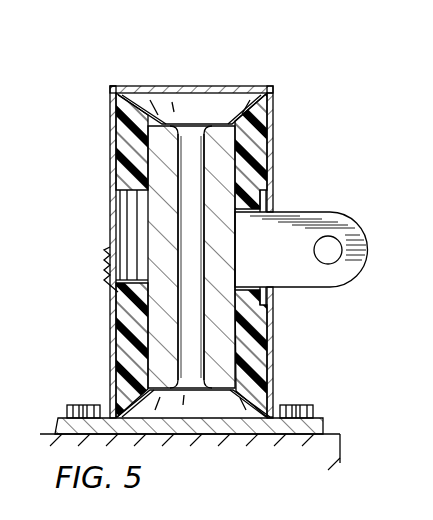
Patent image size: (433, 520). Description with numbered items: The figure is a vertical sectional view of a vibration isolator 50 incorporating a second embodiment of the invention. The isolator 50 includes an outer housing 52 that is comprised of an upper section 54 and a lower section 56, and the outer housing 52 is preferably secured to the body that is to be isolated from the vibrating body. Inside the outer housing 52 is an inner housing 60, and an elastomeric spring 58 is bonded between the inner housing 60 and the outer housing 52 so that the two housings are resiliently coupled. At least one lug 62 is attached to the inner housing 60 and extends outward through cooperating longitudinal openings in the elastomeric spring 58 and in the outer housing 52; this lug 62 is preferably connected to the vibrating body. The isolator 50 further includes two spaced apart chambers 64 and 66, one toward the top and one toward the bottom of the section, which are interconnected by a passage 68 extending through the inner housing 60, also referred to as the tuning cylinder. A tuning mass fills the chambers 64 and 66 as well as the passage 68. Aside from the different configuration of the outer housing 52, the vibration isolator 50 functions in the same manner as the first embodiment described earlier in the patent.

The vibration isolator 50 is at (87, 105).
The outer housing 52 is at (266, 79).
The upper section 54 is at (273, 109).
The lower section 56 is at (270, 382).
The elastomeric spring 58 is at (256, 172).
The inner housing 60 is at (153, 155).
The lug 62 is at (291, 272).
The chamber 64 is at (190, 106).
The chamber 66 is at (204, 405).
The passage 68 is at (187, 243).